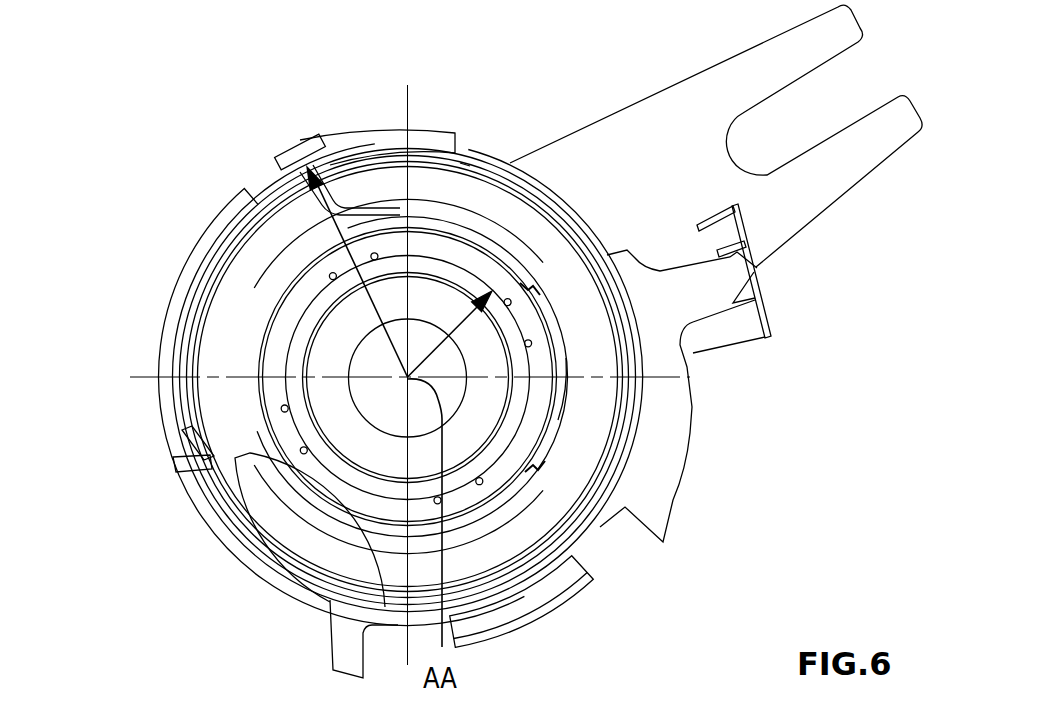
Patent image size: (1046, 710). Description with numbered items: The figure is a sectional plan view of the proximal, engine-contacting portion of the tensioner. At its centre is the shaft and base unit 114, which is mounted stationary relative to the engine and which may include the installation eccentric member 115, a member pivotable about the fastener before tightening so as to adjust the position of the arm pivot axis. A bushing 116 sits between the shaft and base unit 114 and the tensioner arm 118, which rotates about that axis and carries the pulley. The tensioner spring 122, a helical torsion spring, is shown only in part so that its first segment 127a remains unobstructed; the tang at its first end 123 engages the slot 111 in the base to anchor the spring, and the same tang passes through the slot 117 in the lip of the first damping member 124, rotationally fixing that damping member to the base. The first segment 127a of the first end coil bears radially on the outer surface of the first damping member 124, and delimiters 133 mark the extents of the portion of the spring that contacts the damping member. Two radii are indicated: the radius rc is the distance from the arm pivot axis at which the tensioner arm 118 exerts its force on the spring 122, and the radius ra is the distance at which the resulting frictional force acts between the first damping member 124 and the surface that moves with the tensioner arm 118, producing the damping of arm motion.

The slot 111 is at (293, 175).
The shaft and base unit 114 is at (332, 360).
The installation eccentric member 115 is at (358, 138).
The bushing 116 is at (343, 462).
The slot 117 is at (330, 157).
The tensioner arm 118 is at (452, 482).
The tensioner spring 122 is at (450, 220).
The first end 123 is at (330, 215).
The first damping member 124 is at (497, 472).
The first segment 127a is at (560, 405).
The delimiters 133 is at (527, 288).
The radius rc is at (330, 262).
The radius ra is at (455, 318).